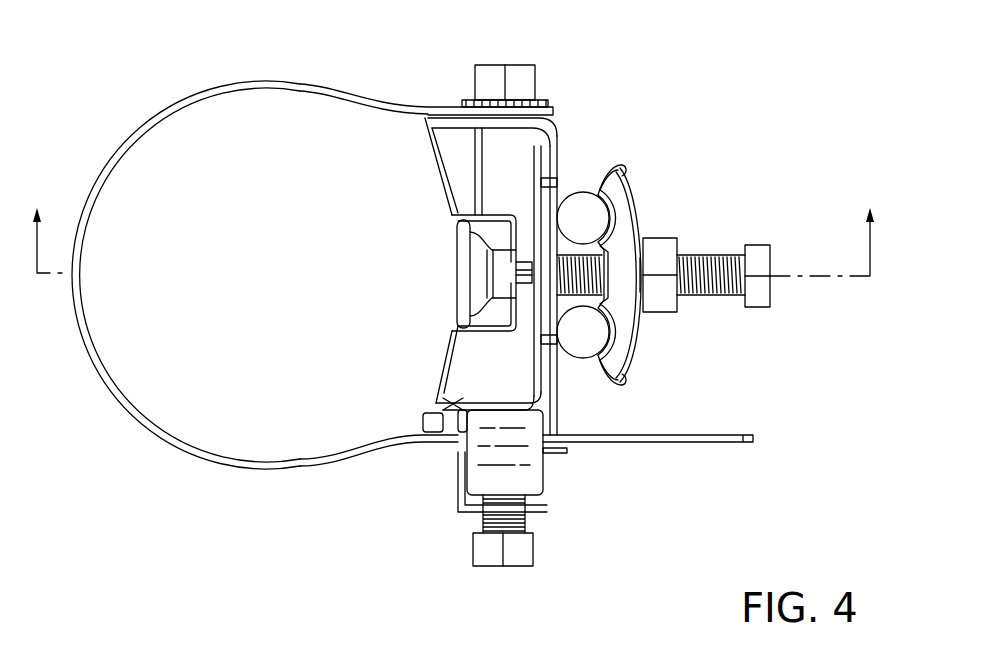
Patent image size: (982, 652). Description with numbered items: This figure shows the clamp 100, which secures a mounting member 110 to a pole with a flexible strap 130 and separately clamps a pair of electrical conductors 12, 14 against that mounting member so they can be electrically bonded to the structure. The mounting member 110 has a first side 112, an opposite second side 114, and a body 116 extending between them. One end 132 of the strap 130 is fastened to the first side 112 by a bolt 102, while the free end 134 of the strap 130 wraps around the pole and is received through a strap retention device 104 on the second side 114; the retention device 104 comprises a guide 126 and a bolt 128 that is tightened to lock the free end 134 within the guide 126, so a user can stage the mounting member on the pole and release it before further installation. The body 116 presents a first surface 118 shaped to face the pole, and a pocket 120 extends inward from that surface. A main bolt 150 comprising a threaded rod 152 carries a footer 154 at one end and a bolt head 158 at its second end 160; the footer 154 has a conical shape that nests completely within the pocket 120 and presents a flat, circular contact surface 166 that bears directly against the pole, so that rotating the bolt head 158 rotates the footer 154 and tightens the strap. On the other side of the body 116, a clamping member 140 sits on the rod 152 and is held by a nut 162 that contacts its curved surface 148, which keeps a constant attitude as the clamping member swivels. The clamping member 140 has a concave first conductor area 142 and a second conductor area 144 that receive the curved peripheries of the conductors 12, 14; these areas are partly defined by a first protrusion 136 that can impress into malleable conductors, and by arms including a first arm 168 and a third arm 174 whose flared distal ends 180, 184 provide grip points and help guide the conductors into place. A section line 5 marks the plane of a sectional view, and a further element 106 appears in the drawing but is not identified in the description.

The section line 5- 5 is at (453, 229).
The electrical conductor 12 is at (579, 200).
The electrical conductor 14 is at (576, 352).
The clamp 100 is at (658, 76).
The bolt 102 is at (506, 68).
The strap retention device 104 is at (446, 488).
The lower fastener 106 is at (458, 503).
The mounting member 110 is at (473, 236).
The first side 112 is at (433, 122).
The second side 114 is at (436, 408).
The body 116 is at (550, 147).
The first surface 118 is at (433, 160).
The pocket 120 is at (448, 227).
The guide 126 is at (534, 470).
The bolt 128 is at (527, 550).
The strap 130 is at (143, 133).
The end 132 is at (441, 107).
The free end 134 is at (622, 442).
The first protrusion 136 is at (627, 290).
The clamping member 140 is at (658, 300).
The first conductor area 142 is at (673, 261).
The second conductor area 144 is at (613, 330).
The curved surface 148 is at (708, 258).
The main bolt 150 is at (804, 268).
The threaded rod 152 is at (740, 248).
The footer 154 is at (455, 300).
The bolt head 158 is at (772, 288).
The second end 160 is at (742, 258).
The nut 162 is at (660, 240).
The contact surface 166 is at (444, 264).
The first arm 168 is at (603, 172).
The third arm 174 is at (625, 372).
The distal end 180 is at (624, 168).
The distal end 184 is at (621, 392).